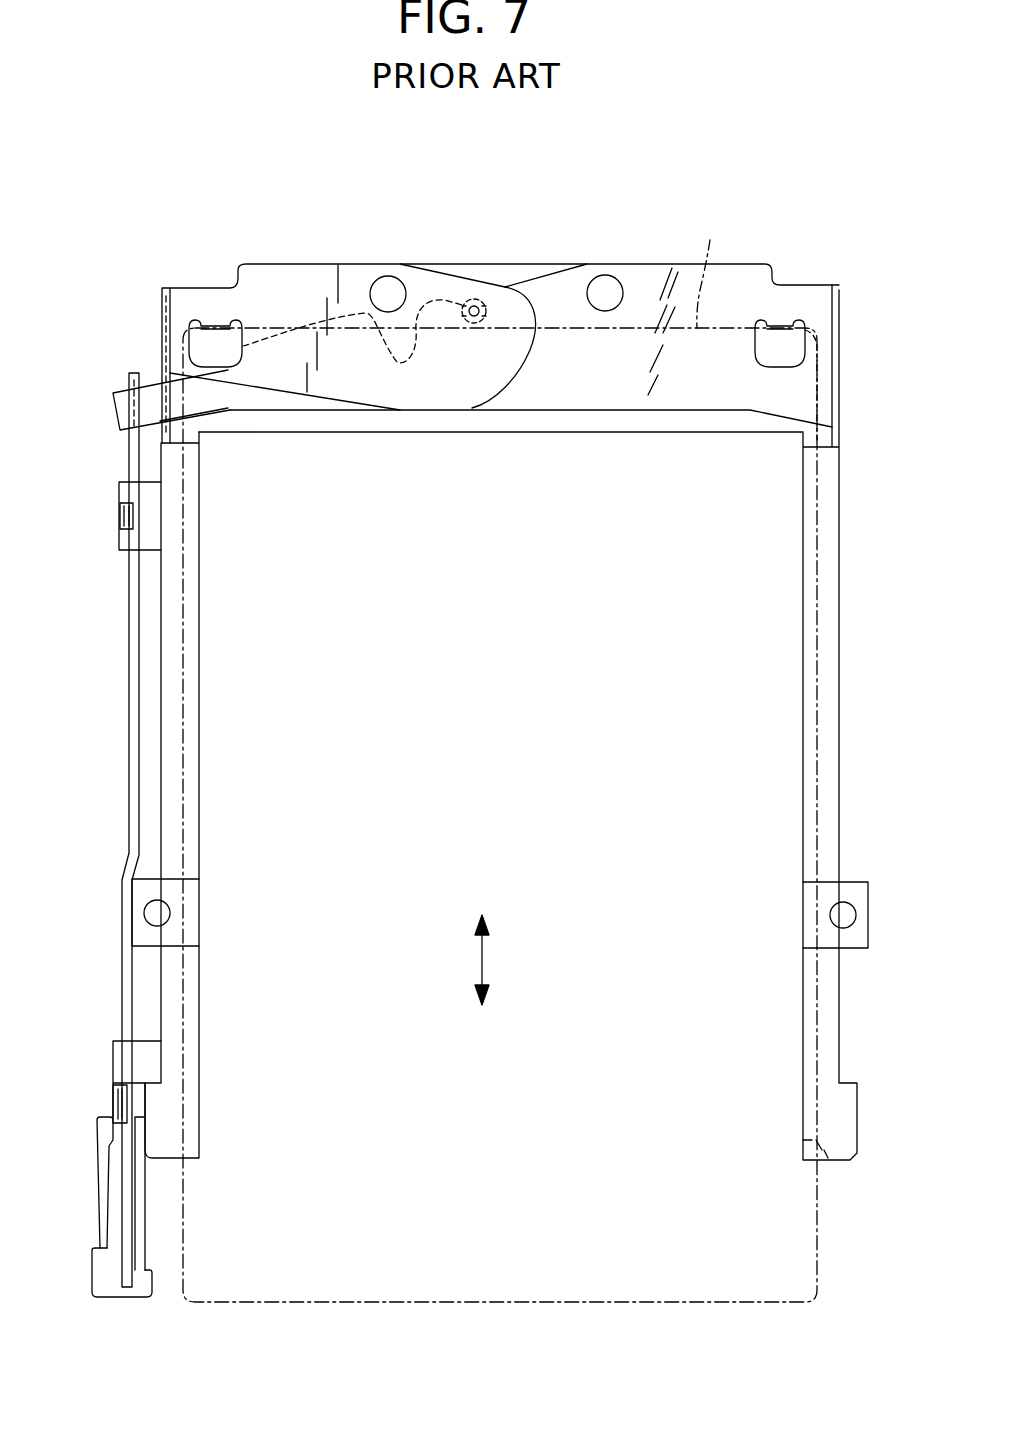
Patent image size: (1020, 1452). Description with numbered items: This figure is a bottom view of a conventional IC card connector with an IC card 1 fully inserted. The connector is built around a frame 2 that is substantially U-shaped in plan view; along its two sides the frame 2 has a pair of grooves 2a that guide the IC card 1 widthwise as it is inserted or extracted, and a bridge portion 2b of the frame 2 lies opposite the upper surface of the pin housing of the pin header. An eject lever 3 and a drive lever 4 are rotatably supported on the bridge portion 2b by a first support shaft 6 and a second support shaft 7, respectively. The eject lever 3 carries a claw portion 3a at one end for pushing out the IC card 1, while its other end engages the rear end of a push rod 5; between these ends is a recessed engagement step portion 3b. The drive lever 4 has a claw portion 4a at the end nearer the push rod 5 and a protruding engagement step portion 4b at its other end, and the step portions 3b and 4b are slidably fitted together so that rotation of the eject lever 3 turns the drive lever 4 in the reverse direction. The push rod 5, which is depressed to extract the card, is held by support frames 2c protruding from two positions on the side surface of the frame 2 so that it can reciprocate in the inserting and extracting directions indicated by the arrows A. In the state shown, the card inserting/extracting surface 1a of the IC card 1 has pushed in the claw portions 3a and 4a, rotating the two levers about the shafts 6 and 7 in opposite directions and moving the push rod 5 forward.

The IC card 1 is at (817, 1215).
The card inserting/extracting surface 1a is at (705, 260).
The frame 2 is at (523, 671).
The grooves 2a is at (815, 770).
The bridge portion 2b is at (527, 272).
The support frames 2c is at (119, 540).
The eject lever 3 is at (735, 270).
The claw portion 3a is at (782, 320).
The recessed engagement step portion 3b is at (486, 305).
The drive lever 4 is at (287, 268).
The claw portion 4a is at (213, 320).
The protruding engagement step portion 4b is at (476, 305).
The push rod 5 is at (125, 742).
The first support shaft 6 is at (605, 288).
The second support shaft 7 is at (388, 290).
The arrows A is at (482, 958).